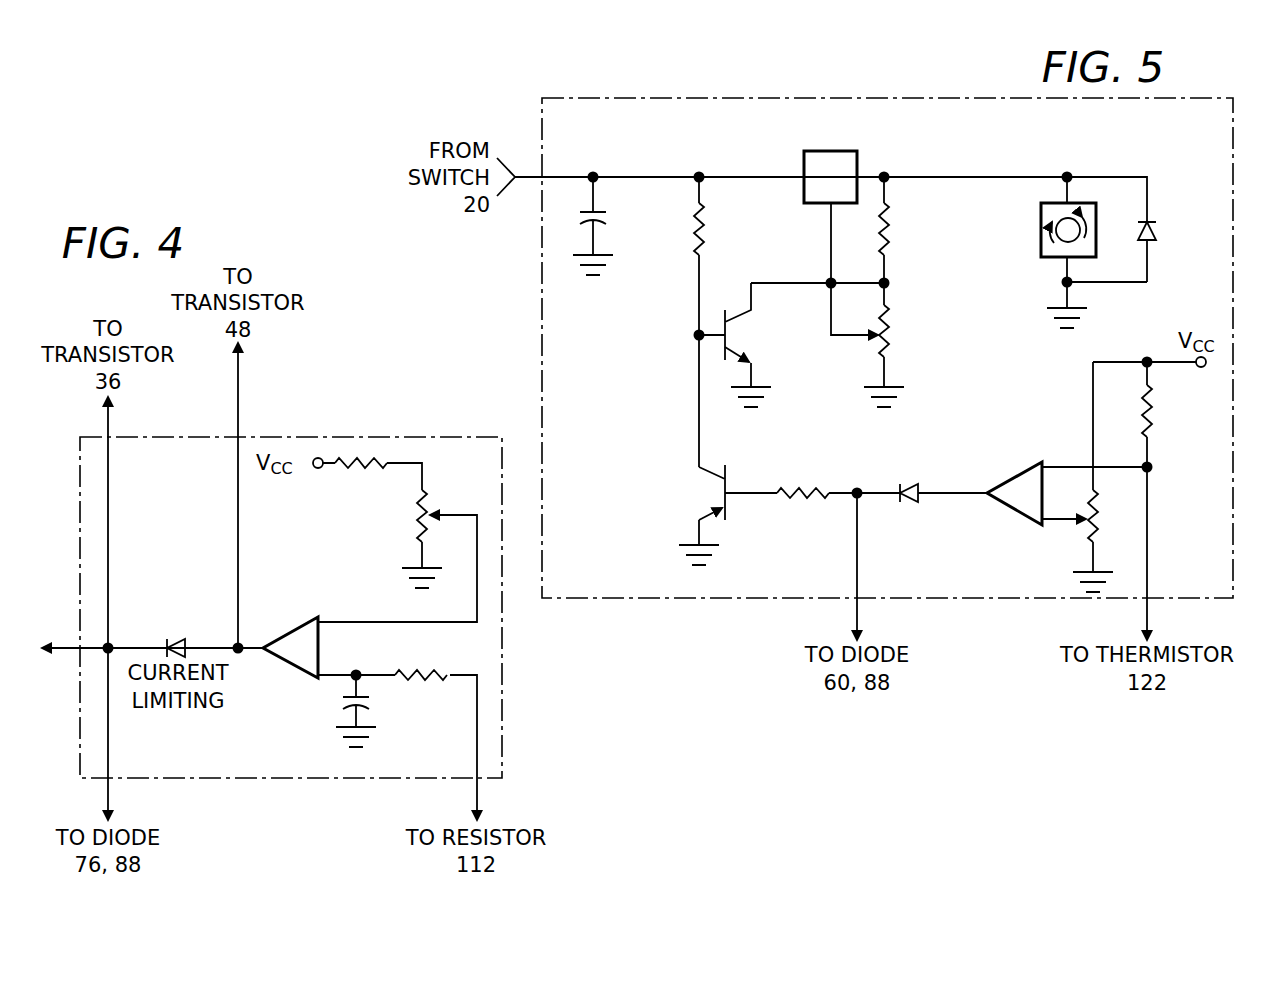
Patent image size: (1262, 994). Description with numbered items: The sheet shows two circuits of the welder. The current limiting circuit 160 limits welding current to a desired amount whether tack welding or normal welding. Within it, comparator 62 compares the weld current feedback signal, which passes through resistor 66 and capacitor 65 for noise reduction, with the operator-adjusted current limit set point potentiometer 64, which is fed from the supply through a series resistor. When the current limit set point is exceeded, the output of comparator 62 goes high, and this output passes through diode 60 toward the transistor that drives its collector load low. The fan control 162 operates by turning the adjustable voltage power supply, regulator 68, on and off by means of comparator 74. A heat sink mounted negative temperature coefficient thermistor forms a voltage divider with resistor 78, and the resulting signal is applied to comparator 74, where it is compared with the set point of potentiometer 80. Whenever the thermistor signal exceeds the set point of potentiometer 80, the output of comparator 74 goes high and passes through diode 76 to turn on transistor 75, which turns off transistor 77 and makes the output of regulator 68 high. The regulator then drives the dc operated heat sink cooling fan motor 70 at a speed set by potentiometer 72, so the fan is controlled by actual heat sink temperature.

In FIG. 4, the current limiting circuit 160 is at (430, 436).
In FIG. 4, the diode 60 is at (172, 639).
In FIG. 4, the comparator 62 is at (295, 629).
In FIG. 4, the potentiometer 64 is at (417, 513).
In FIG. 4, the capacitor 65 is at (343, 698).
In FIG. 4, the resistor 66 is at (412, 683).
In FIG. 5, the fan control 162 is at (767, 96).
In FIG. 5, the regulator 68 is at (838, 151).
In FIG. 5, the motor 70 is at (1040, 234).
In FIG. 5, the potentiometer 72 is at (890, 340).
In FIG. 5, the comparator 74 is at (1016, 472).
In FIG. 5, the transistor 75 is at (730, 500).
In FIG. 5, the diode 76 is at (905, 500).
In FIG. 5, the transistor 77 is at (730, 338).
In FIG. 5, the resistor 78 is at (1157, 419).
In FIG. 5, the potentiometer 80 is at (1086, 534).